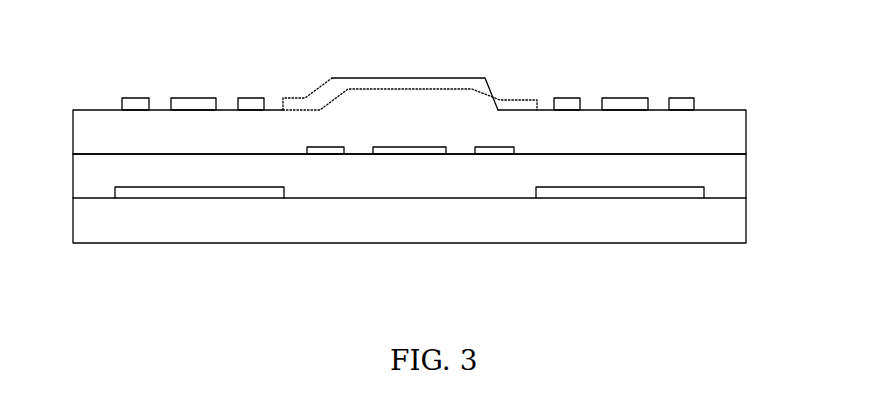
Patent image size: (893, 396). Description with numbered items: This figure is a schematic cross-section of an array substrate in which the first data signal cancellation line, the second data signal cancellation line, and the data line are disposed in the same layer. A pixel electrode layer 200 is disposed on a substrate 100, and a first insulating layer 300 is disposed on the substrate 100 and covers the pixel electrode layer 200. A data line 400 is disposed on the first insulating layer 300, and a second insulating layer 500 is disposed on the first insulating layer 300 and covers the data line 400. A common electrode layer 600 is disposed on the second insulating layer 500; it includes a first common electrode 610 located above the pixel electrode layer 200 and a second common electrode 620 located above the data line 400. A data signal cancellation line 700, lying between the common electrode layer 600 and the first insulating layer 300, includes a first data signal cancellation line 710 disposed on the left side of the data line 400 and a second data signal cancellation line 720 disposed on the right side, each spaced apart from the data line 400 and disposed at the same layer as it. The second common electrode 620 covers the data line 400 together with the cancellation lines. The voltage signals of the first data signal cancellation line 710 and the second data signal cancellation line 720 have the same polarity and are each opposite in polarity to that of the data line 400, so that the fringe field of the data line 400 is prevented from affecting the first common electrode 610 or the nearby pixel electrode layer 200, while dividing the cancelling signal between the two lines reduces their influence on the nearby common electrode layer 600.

The substrate 100 is at (720, 227).
The pixel electrode layer 200 is at (133, 192).
The first insulating layer 300 is at (720, 169).
The data line 400 is at (400, 148).
The second insulating layer 500 is at (720, 135).
The common electrode layer 600 is at (426, 65).
The first common electrode 610 is at (132, 103).
The second common electrode 620 is at (418, 79).
The data signal cancellation line 700 is at (409, 228).
The first data signal cancellation line 710 is at (335, 150).
The second data signal cancellation line 720 is at (492, 211).